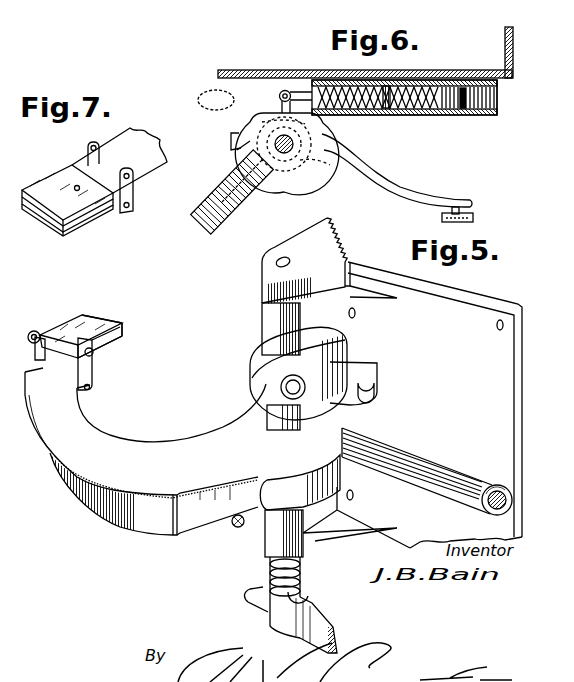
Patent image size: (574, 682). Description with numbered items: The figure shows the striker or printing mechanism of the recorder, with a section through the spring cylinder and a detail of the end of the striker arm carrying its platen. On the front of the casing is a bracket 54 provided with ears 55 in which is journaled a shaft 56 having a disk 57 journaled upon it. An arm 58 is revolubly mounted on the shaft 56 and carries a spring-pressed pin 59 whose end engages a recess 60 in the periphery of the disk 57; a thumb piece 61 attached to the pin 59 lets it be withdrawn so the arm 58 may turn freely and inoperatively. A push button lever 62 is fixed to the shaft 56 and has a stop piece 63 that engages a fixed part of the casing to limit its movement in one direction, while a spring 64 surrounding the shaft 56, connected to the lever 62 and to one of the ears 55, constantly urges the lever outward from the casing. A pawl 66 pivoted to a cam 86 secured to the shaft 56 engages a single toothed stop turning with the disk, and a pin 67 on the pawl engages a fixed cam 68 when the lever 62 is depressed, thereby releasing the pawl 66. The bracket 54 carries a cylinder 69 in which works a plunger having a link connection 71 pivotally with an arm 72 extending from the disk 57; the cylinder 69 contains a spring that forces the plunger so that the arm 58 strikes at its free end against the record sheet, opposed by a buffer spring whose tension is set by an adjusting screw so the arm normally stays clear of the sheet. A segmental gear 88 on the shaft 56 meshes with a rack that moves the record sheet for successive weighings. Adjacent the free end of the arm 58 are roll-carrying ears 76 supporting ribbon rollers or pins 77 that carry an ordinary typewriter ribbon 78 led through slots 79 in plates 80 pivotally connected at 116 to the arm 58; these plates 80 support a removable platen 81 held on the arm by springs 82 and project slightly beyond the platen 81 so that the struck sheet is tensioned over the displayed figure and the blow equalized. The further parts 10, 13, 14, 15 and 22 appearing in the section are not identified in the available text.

In FIG. 6, the coil spring 10 is at (392, 114).
In FIG. 6, the spring housing 13 is at (363, 114).
In FIG. 6, the plunger 14 is at (437, 114).
In FIG. 6, the compressed spring coils 15 is at (465, 115).
In FIG. 6, the casing wall 22 is at (472, 70).
In FIG. 5, the support plate 54 is at (434, 405).
In FIG. 5, the stem 55 is at (263, 311).
In FIG. 5, the head 56 is at (263, 278).
In FIG. 6, the hub 57 is at (308, 178).
In FIG. 5, the hub 57 is at (267, 499).
In FIG. 7, the curved band 58 is at (137, 146).
In FIG. 6, the curved band 58 is at (207, 229).
In FIG. 5, the curved band 58 is at (145, 451).
In FIG. 6, the rack strip 59 is at (262, 199).
In FIG. 6, the strip end 60 is at (240, 153).
In FIG. 5, the screw 61 is at (240, 522).
In FIG. 6, the lever arm 62 is at (408, 189).
In FIG. 5, the lever arm 62 is at (320, 633).
In FIG. 6, the hook 63 is at (232, 137).
In FIG. 5, the hook 63 is at (248, 590).
In FIG. 6, the nut 64 is at (252, 120).
In FIG. 5, the nut 64 is at (301, 568).
In FIG. 5, the shank 66 is at (280, 410).
In FIG. 5, the pin 67 is at (332, 411).
In FIG. 5, the bracket arm 68 is at (347, 371).
In FIG. 6, the bar 69 is at (483, 115).
In FIG. 5, the bar 69 is at (427, 458).
In FIG. 6, the rod 71 is at (300, 92).
In FIG. 5, the rod 71 is at (345, 432).
In FIG. 6, the pivot eye 72 is at (280, 105).
In FIG. 7, the clip 76 is at (133, 204).
In FIG. 5, the clip 76 is at (77, 378).
In FIG. 5, the eye 77 is at (29, 338).
In FIG. 5, the block 78 is at (43, 333).
In FIG. 7, the plate 79 is at (33, 220).
In FIG. 5, the plate 79 is at (98, 318).
In FIG. 7, the top plate 80 is at (40, 190).
In FIG. 5, the top plate 80 is at (122, 325).
In FIG. 7, the bottom plate 81 is at (55, 247).
In FIG. 7, the intermediate plate 82 is at (73, 227).
In FIG. 5, the intermediate plate 82 is at (120, 348).
In FIG. 5, the collar 86 is at (253, 348).
In FIG. 5, the hole 88 is at (336, 273).
In FIG. 7, the hole 116 is at (77, 188).